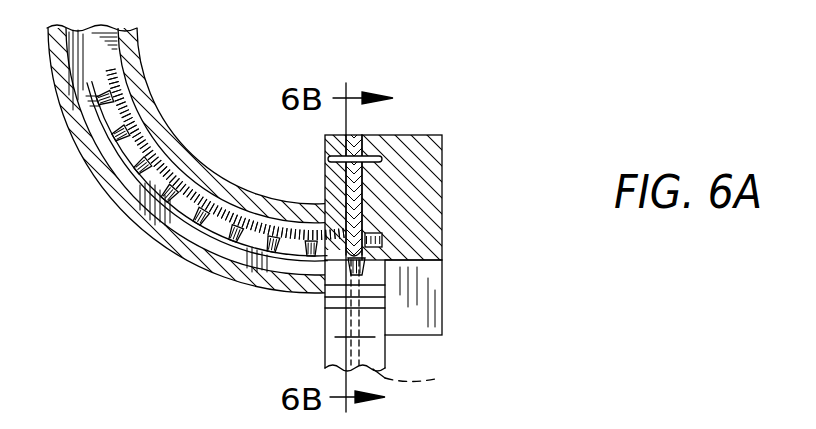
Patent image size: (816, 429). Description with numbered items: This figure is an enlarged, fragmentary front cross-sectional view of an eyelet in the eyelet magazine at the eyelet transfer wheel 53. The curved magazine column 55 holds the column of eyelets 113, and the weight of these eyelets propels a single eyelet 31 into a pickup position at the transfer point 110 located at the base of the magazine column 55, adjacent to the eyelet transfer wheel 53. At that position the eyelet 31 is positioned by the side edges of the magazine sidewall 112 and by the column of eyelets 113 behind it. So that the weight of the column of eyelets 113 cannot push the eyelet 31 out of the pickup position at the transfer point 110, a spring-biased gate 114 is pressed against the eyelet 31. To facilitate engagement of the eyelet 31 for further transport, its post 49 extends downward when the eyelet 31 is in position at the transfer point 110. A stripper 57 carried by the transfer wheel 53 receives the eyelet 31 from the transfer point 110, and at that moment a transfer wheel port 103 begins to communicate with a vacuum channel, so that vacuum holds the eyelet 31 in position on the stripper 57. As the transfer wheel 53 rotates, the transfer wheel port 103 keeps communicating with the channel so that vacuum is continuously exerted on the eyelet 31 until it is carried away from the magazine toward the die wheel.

The eyelet 31 is at (325, 289).
The post 49 is at (385, 282).
The eyelet transfer wheel 53 is at (385, 357).
The magazine column 55 is at (153, 117).
The stripper 57 is at (336, 290).
The transfer wheel port 103 is at (445, 377).
The transfer point 110 is at (383, 270).
The magazine sidewall 112 is at (376, 233).
The column of eyelets 113 is at (245, 268).
The gate 114 is at (353, 185).